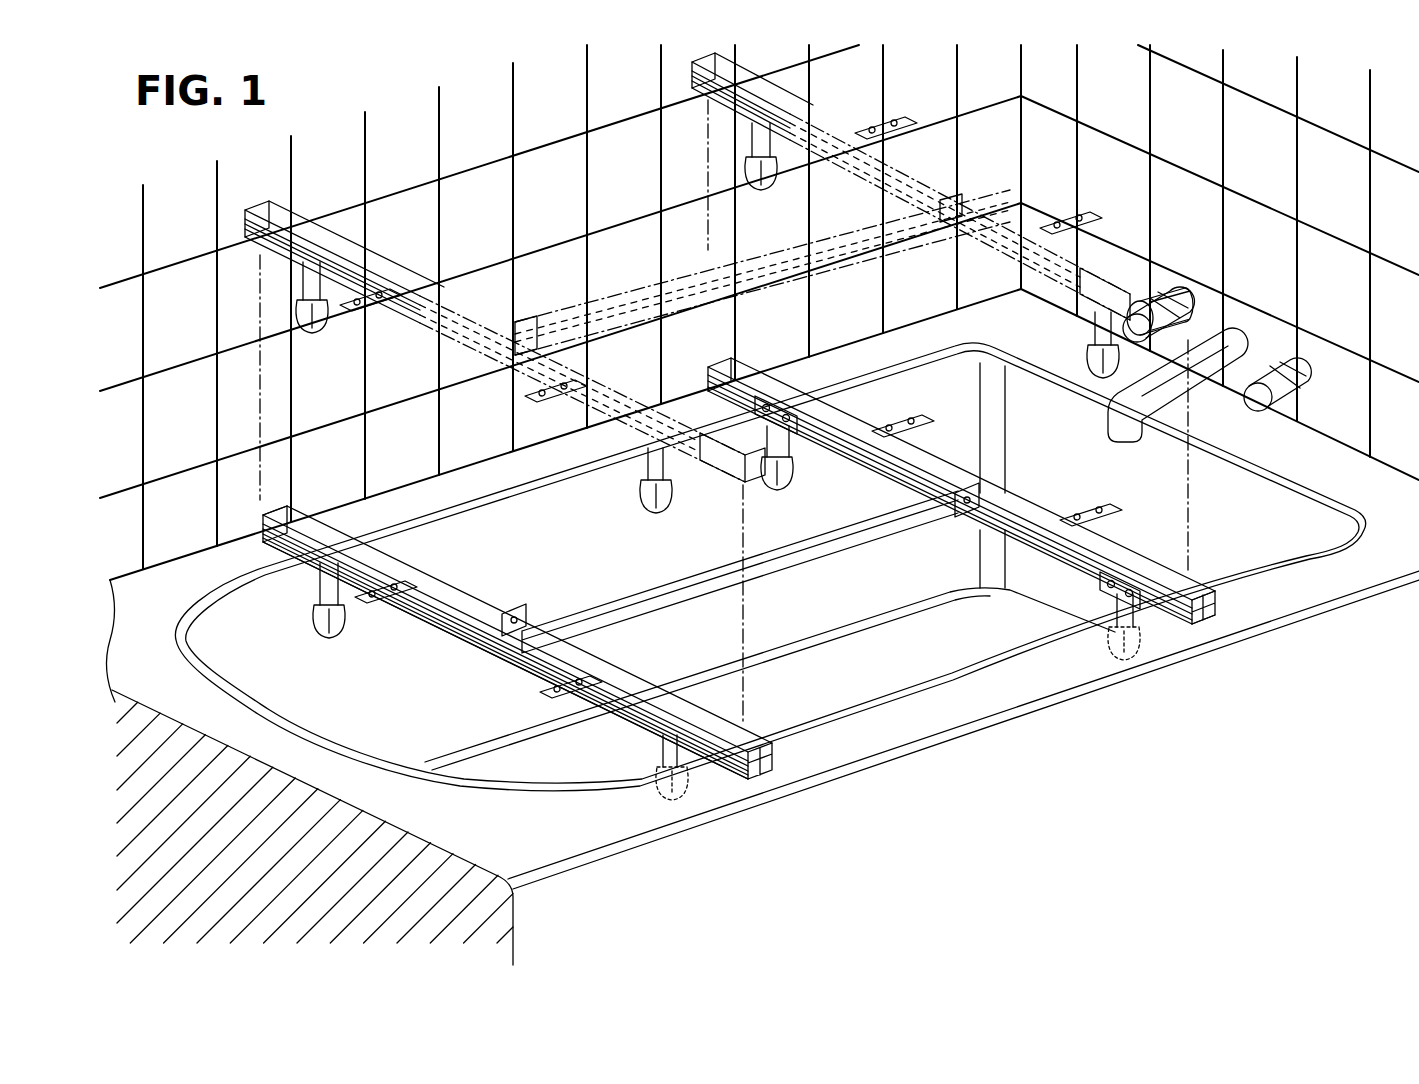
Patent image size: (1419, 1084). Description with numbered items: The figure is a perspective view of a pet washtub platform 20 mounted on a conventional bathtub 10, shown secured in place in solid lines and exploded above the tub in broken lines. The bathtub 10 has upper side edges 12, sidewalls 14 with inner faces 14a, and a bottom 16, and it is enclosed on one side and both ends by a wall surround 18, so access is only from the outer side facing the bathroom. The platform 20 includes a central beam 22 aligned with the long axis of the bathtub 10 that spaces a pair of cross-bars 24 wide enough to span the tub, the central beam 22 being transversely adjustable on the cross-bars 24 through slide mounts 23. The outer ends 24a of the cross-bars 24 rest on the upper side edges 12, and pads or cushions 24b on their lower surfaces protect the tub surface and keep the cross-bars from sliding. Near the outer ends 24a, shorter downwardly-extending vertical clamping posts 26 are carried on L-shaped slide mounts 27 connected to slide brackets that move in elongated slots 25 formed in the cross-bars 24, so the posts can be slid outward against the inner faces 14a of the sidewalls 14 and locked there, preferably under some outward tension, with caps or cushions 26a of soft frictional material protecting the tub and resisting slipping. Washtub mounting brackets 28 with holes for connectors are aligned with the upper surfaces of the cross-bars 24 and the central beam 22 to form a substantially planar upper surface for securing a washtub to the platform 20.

The bathtub 10 is at (1327, 437).
The upper side edges 12 is at (513, 467).
The sidewalls 14 is at (770, 603).
The inner faces 14a is at (512, 530).
The bottom 16 is at (793, 703).
The wall surround 18 is at (405, 232).
The pet washtub platform 20 is at (768, 579).
The central beam 22 is at (782, 566).
The slide mounts 23 is at (965, 498).
The cross-bars 24 is at (850, 426).
The outer ends 24a is at (297, 548).
The pads or cushions 24b is at (280, 548).
The elongated slots 25 is at (1032, 540).
The vertical clamping posts 26 is at (318, 590).
The caps or cushions 26a is at (340, 634).
The slide mounts 27 is at (1125, 575).
The brackets 28 is at (385, 606).